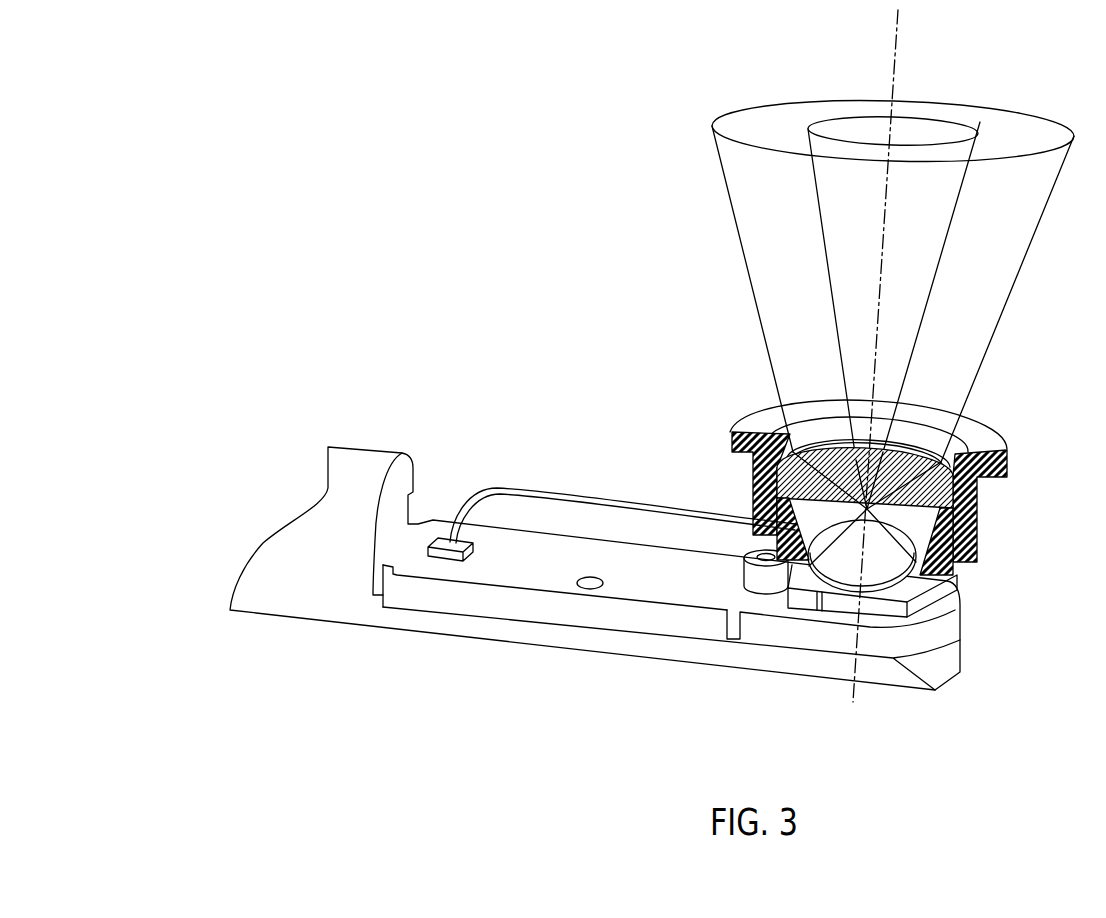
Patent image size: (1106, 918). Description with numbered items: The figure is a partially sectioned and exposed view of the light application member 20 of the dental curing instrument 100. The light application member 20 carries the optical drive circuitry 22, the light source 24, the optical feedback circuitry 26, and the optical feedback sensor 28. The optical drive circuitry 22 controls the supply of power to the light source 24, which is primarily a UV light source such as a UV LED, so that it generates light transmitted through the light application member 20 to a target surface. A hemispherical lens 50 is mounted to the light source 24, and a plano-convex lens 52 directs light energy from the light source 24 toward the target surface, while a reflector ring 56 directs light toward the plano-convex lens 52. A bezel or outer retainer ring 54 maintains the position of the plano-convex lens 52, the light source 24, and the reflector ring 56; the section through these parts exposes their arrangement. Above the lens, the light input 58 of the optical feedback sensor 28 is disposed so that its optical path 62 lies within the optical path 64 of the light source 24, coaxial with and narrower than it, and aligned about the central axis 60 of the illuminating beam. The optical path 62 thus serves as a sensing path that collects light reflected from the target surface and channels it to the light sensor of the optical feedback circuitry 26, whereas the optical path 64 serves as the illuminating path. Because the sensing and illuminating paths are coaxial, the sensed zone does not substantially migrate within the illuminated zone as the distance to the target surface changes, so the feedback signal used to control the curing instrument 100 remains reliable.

The curing instrument 100 is at (450, 248).
The light application member 20 is at (608, 649).
The optical drive circuitry 22 is at (875, 615).
The light source 24 is at (803, 632).
The optical feedback circuitry 26 is at (445, 553).
The optical feedback sensor 28 is at (575, 498).
The hemispherical lens 50 is at (902, 548).
The plano-convex lens 52 is at (757, 487).
The bezel 54 is at (745, 430).
The reflector ring 56 is at (762, 550).
The light input 58 is at (866, 507).
The central axis 60 is at (893, 80).
The optical path of the light input 62 is at (819, 208).
The optical path of the light source 64 is at (728, 197).